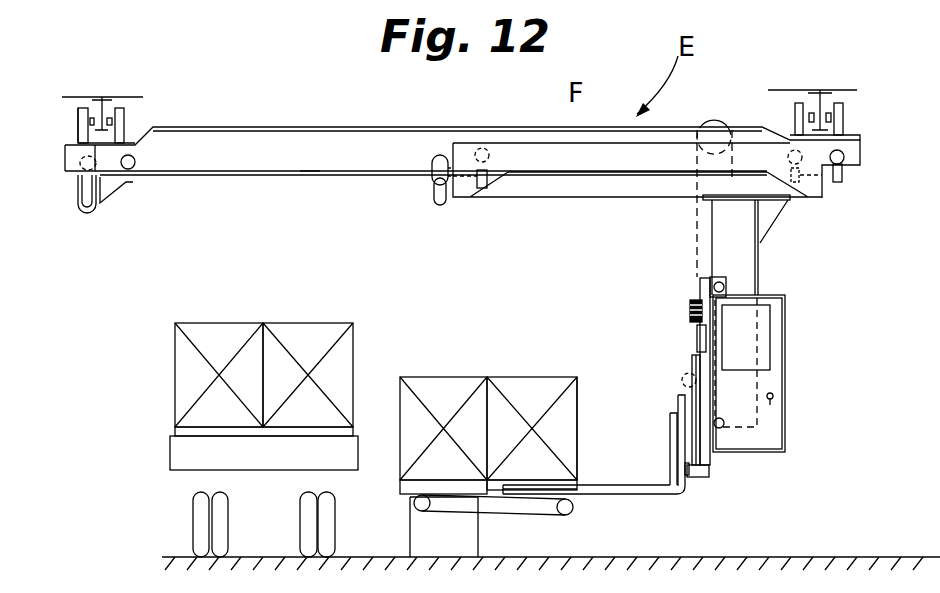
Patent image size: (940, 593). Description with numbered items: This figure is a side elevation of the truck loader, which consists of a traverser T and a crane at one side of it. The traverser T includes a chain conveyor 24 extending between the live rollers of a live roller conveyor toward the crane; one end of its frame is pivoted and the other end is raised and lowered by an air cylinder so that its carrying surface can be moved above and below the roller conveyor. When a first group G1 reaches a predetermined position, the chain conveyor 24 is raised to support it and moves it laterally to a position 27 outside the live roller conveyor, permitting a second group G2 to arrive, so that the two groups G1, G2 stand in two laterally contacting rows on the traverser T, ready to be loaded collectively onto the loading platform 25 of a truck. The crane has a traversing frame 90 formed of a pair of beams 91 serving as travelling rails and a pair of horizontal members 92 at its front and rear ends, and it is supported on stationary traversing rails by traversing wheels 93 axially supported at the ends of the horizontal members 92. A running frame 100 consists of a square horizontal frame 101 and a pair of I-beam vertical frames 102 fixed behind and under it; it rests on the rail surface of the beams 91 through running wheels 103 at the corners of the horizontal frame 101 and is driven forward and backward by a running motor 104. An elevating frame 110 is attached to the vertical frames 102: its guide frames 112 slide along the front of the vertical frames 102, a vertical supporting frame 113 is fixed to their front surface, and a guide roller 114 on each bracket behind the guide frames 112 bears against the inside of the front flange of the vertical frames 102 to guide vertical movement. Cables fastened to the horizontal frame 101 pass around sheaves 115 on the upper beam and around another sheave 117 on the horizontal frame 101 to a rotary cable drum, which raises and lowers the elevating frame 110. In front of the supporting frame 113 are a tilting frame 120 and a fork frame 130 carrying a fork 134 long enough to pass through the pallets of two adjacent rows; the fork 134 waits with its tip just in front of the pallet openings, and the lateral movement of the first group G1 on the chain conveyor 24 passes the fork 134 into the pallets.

The chain conveyor 24 is at (450, 512).
The loading platform 25 is at (170, 444).
The position outside the live roller conveyor 27 is at (578, 385).
The traversing frame 90 is at (283, 123).
The beams 91 is at (300, 175).
The horizontal members 92 is at (78, 136).
The traversing wheels 93 is at (78, 118).
The running frame 100 is at (637, 169).
The horizontal frame 101 is at (528, 174).
The vertical frames 102 is at (760, 245).
The running wheels 103 is at (440, 155).
The running motor 104 is at (440, 205).
The elevating frame 110 is at (700, 330).
The guide frames 112 is at (722, 393).
The vertical supporting frame 113 is at (692, 362).
The guide roller 114 is at (712, 284).
The sheaves 115 is at (690, 308).
The sheave 117 is at (706, 121).
The tilting frame 120 is at (678, 400).
The fork frame 130 is at (668, 442).
The fork 134 is at (640, 494).
The first group G1 is at (535, 377).
The second group G2 is at (447, 377).
The traverser T is at (493, 521).